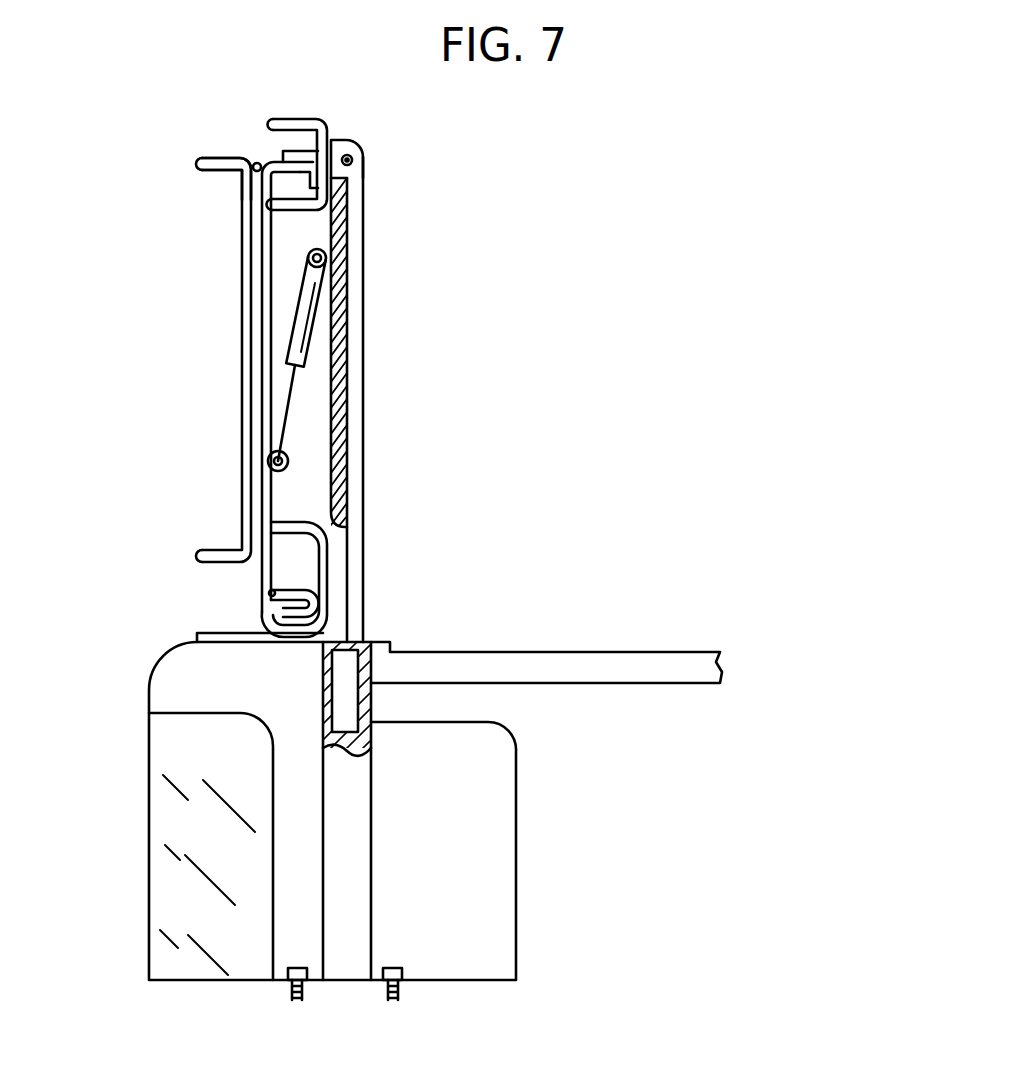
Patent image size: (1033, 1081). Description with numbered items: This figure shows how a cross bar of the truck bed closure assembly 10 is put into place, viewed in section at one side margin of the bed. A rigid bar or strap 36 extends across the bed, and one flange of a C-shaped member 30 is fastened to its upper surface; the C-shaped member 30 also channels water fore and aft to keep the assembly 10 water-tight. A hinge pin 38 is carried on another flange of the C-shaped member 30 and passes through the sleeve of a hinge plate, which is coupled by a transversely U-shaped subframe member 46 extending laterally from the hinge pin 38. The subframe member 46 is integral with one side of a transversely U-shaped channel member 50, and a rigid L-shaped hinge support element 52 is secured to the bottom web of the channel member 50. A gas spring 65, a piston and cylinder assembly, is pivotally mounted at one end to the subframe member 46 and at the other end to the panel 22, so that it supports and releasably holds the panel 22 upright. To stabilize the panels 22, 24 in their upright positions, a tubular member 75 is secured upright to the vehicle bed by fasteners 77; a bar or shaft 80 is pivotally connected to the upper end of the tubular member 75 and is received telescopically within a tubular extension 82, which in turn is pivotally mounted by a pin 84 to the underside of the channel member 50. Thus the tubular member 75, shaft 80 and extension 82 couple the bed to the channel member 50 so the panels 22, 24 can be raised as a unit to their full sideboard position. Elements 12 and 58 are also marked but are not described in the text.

The closure assembly 10 is at (445, 472).
The cabinet 12 is at (137, 674).
The panel 22 is at (262, 517).
The panel 24 is at (245, 460).
The C-shaped member 30 is at (337, 598).
The rigid bar or strap 36 is at (637, 672).
The hinge pin 38 is at (268, 593).
The subframe member 46 is at (342, 314).
The U-shaped channel member 50 is at (325, 118).
The L-shaped hinge support element 52 is at (300, 150).
The hook end 58 is at (252, 163).
The gas spring 65 is at (300, 355).
The tubular member 75 is at (365, 850).
The fasteners 77 is at (293, 968).
The bar or shaft 80 is at (364, 605).
The tubular extension 82 is at (348, 292).
The pin 84 is at (355, 157).